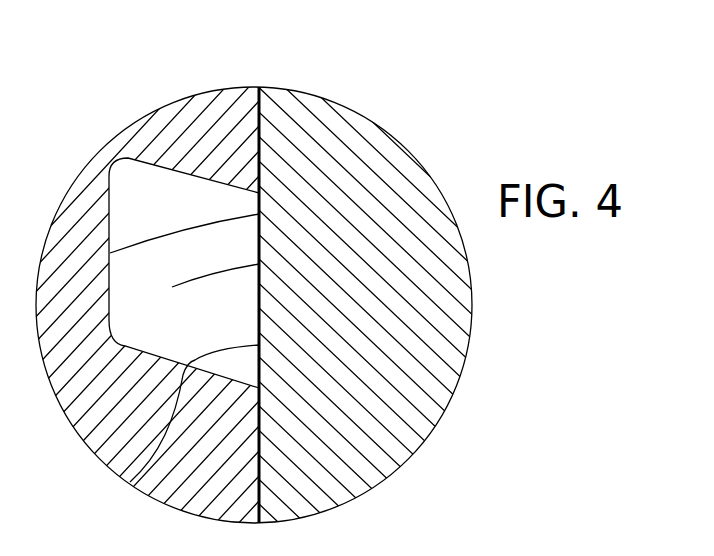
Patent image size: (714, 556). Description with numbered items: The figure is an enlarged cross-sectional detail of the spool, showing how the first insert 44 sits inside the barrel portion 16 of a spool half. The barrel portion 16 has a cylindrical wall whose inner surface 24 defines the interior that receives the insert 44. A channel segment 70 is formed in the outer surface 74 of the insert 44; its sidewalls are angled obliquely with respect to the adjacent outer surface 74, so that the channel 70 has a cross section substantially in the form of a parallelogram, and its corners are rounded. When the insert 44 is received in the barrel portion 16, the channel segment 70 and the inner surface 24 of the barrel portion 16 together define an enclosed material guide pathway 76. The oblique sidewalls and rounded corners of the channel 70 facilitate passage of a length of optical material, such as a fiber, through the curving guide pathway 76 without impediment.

The barrel portion 16 is at (327, 137).
The first insert 44 is at (180, 150).
The channel segment 70 is at (259, 215).
The material guide pathway 76 is at (259, 264).
The inner surface 24 is at (130, 482).
The outer surface 74 is at (323, 507).